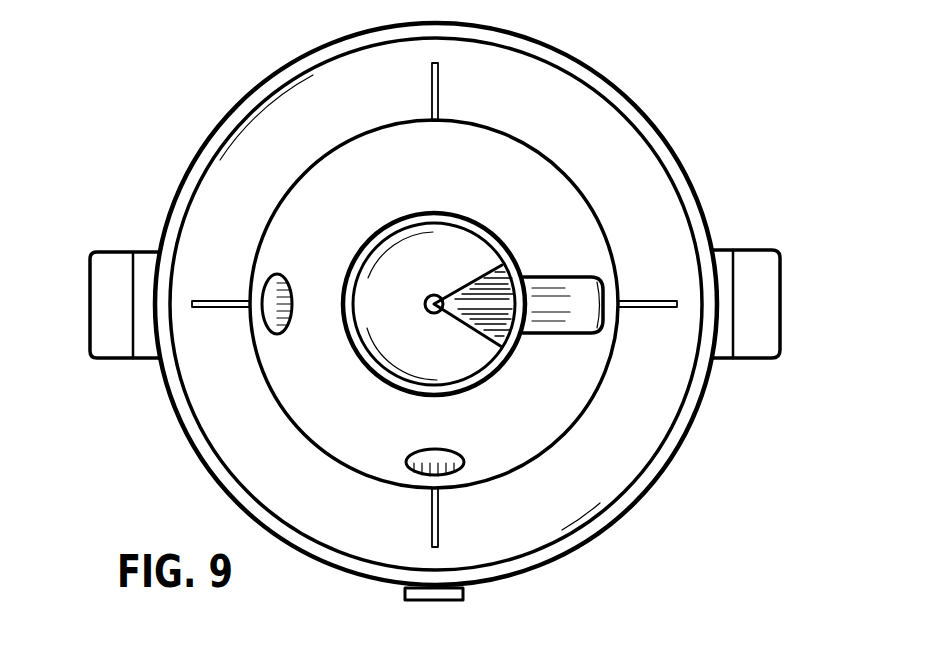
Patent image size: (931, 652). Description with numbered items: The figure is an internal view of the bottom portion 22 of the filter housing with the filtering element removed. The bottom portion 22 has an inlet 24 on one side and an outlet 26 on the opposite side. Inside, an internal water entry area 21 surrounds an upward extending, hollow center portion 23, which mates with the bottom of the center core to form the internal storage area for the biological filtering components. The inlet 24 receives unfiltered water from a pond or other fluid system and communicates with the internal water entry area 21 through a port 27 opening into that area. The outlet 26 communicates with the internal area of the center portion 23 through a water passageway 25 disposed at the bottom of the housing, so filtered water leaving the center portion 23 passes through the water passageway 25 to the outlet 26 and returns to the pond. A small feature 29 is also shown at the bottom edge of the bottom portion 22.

The internal water entry area 21 is at (385, 197).
The bottom portion 22 is at (172, 127).
The center portion 23 is at (453, 214).
The inlet 24 is at (113, 257).
The water passageway 25 is at (583, 327).
The outlet 26 is at (781, 296).
The port 27 is at (289, 299).
The bottom tab 29 is at (465, 594).